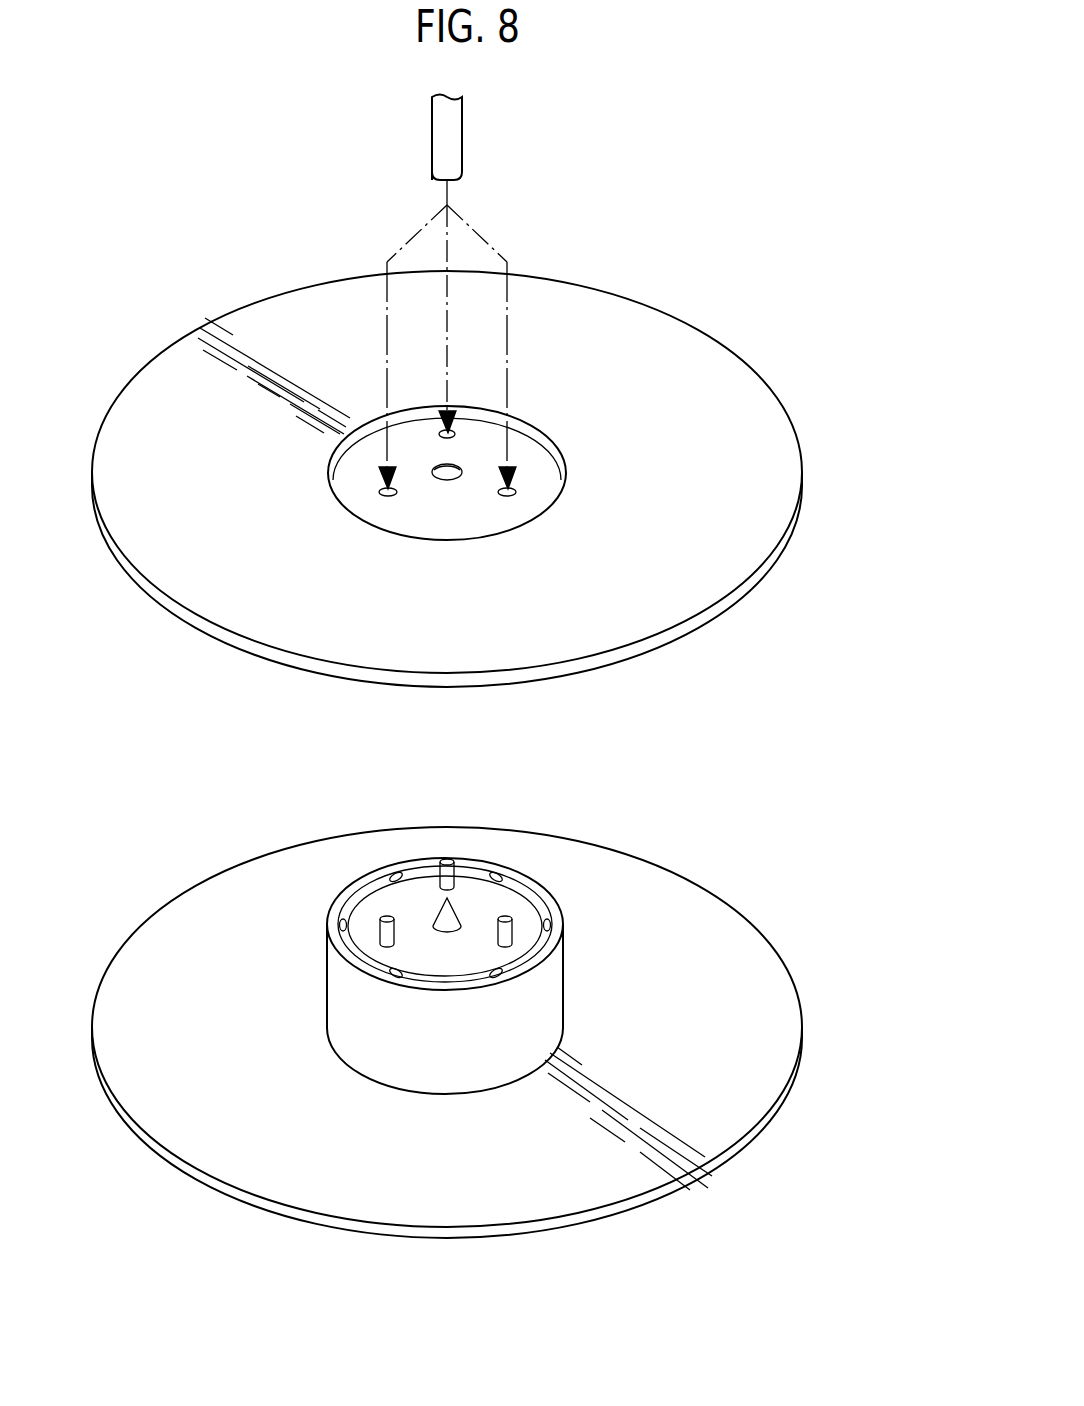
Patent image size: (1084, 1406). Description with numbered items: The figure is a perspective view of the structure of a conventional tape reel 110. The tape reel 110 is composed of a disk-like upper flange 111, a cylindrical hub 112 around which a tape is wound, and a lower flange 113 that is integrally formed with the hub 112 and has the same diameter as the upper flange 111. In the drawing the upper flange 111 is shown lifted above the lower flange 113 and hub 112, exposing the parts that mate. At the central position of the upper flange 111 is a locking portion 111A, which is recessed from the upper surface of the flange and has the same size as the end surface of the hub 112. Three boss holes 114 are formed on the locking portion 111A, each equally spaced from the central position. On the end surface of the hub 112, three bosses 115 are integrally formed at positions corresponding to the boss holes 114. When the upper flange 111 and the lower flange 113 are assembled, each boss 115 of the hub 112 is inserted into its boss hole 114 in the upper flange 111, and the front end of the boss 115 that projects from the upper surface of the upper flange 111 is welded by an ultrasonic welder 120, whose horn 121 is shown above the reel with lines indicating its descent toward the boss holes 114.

The tape reel 110 is at (537, 265).
The upper flange 111 is at (704, 378).
The locking portion 111A is at (537, 457).
The hub 112 is at (403, 1045).
The lower flange 113 is at (603, 886).
The boss hole 114 is at (383, 480).
The boss 115 is at (506, 916).
The ultrasonic welder 120 is at (621, 138).
The welded horn 121 is at (452, 128).